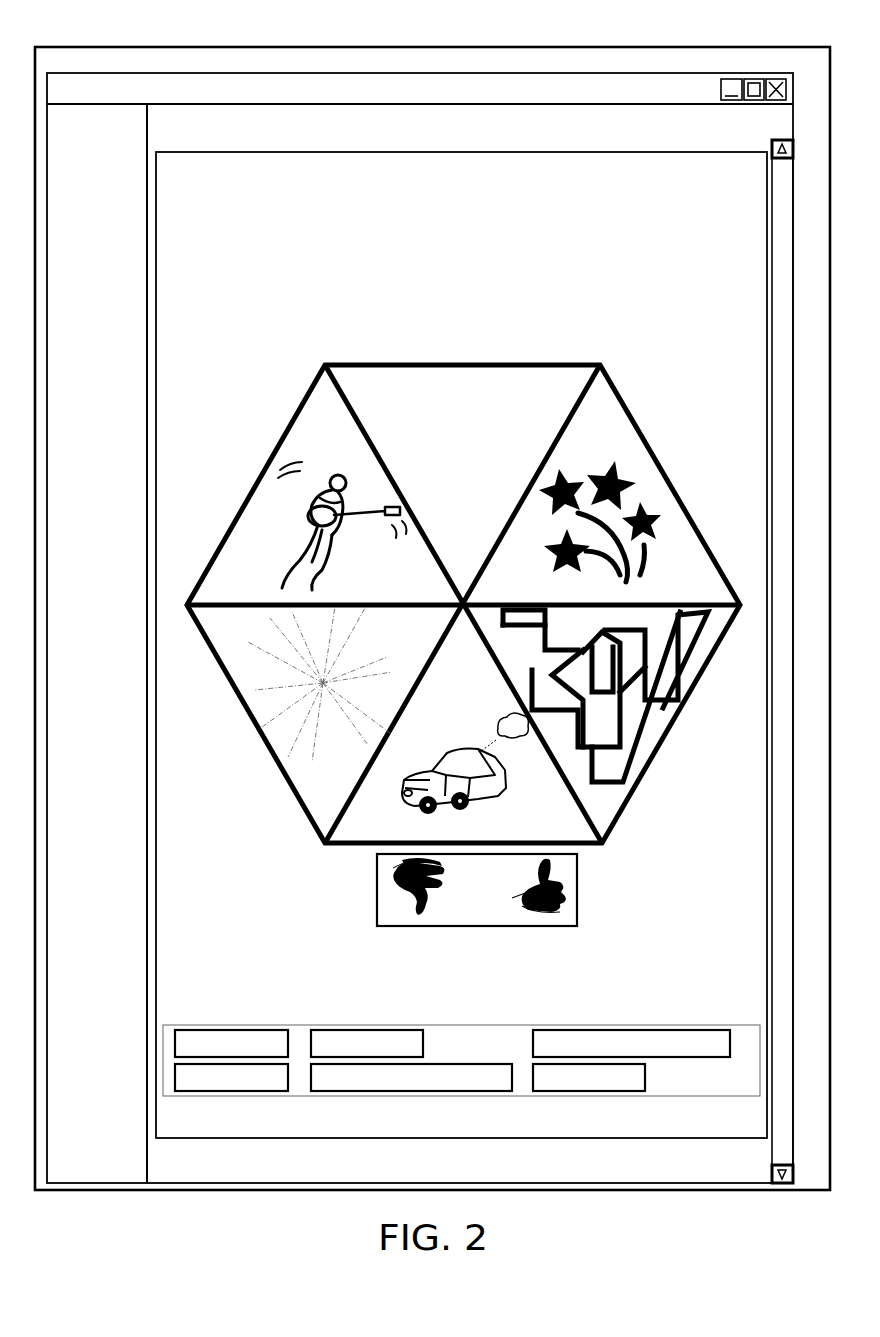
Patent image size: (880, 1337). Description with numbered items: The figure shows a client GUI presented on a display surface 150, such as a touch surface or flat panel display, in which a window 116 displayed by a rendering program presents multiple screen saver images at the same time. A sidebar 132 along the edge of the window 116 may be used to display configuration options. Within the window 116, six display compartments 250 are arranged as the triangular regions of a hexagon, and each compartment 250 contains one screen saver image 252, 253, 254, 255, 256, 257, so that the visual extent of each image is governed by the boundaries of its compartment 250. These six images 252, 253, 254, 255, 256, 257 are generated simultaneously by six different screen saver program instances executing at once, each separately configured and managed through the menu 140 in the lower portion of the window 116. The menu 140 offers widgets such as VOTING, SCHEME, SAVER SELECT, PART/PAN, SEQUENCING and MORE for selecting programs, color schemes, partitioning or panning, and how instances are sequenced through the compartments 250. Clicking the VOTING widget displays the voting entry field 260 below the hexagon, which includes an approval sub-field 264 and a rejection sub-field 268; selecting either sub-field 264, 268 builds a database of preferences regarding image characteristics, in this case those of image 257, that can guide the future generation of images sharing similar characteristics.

The display surface 150 is at (584, 34).
The sidebar 132 is at (66, 115).
The rejection sub-field 268 is at (412, 898).
The window 116 is at (166, 160).
The menu 140 is at (163, 1028).
The display compartments 250 is at (287, 433).
The screen saver image 252 is at (320, 698).
The screen saver image 253 is at (316, 530).
The screen saver image 254 is at (453, 439).
The screen saver image 255 is at (620, 530).
The screen saver image 256 is at (604, 696).
The screen saver image 257 is at (480, 775).
The voting entry field 260 is at (578, 892).
The approval sub-field 264 is at (543, 912).